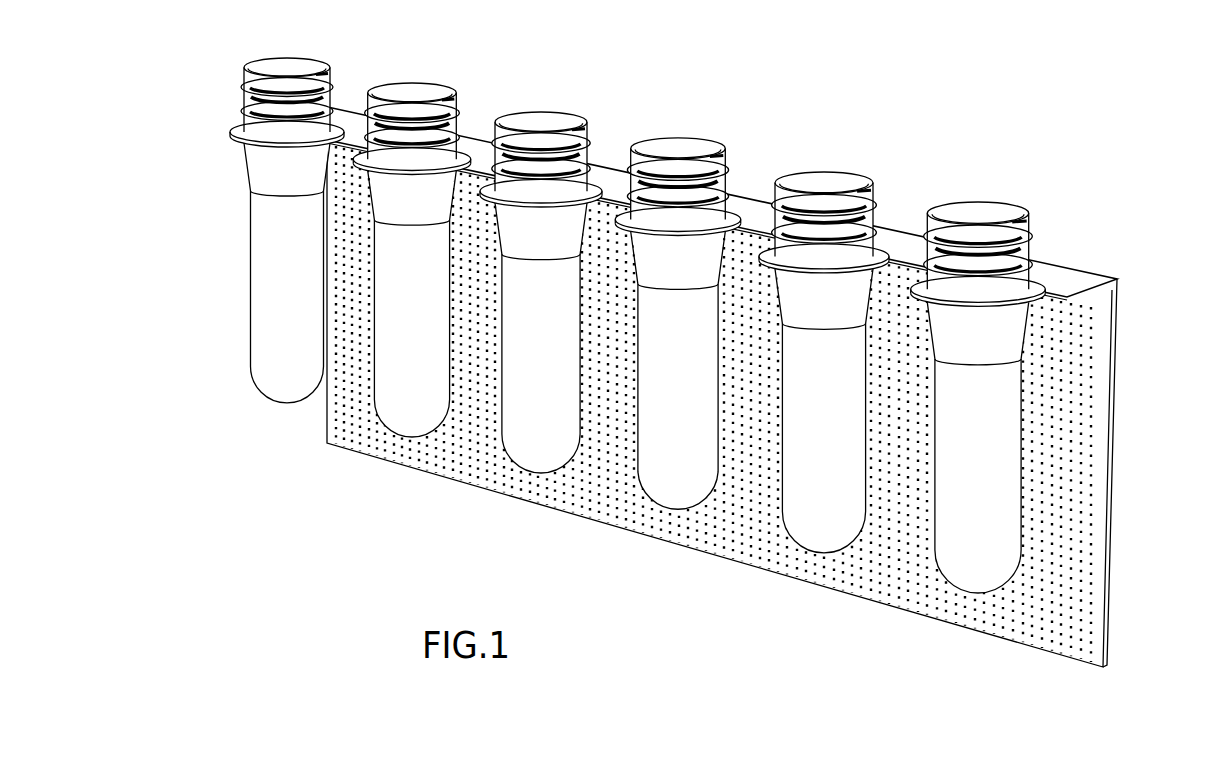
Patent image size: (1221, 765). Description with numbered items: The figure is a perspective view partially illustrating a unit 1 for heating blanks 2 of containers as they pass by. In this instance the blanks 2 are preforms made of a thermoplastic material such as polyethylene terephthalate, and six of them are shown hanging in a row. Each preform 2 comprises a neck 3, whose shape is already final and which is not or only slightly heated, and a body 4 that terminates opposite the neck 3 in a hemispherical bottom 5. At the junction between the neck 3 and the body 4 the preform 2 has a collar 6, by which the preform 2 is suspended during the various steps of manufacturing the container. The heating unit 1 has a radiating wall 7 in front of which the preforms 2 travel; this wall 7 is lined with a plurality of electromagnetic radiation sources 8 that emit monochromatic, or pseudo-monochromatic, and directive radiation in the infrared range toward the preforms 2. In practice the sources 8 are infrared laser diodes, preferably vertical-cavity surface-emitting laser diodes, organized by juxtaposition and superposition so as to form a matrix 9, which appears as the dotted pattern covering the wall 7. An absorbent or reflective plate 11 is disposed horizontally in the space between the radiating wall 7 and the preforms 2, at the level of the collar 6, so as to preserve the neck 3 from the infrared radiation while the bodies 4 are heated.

The heating unit 1 is at (705, 362).
The blank 2 is at (952, 378).
The neck 3 is at (1031, 247).
The body 4 is at (1003, 458).
The hemispherical bottom 5 is at (952, 573).
The collar 6 is at (1033, 292).
The radiating wall 7 is at (1116, 358).
The electromagnetic radiation source 8 is at (1105, 305).
The matrix 9 is at (1111, 416).
The absorbent plate 11 is at (1082, 283).